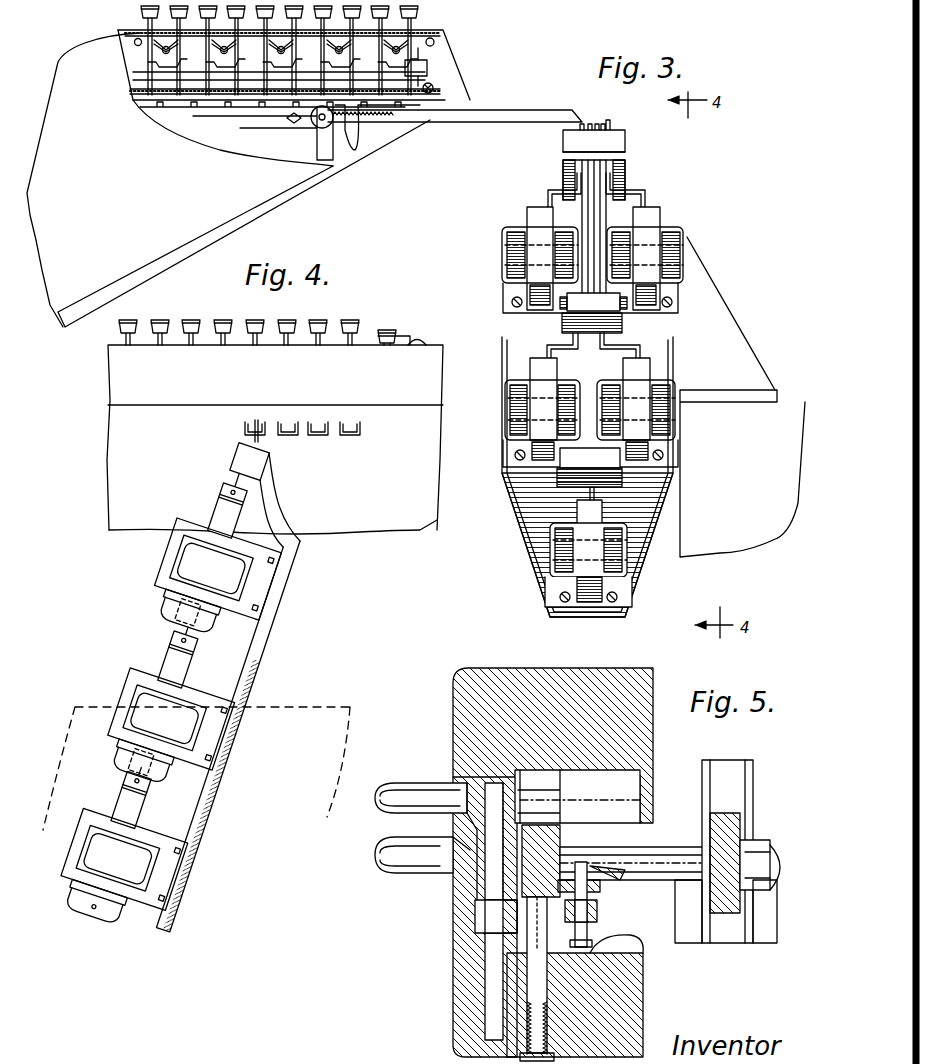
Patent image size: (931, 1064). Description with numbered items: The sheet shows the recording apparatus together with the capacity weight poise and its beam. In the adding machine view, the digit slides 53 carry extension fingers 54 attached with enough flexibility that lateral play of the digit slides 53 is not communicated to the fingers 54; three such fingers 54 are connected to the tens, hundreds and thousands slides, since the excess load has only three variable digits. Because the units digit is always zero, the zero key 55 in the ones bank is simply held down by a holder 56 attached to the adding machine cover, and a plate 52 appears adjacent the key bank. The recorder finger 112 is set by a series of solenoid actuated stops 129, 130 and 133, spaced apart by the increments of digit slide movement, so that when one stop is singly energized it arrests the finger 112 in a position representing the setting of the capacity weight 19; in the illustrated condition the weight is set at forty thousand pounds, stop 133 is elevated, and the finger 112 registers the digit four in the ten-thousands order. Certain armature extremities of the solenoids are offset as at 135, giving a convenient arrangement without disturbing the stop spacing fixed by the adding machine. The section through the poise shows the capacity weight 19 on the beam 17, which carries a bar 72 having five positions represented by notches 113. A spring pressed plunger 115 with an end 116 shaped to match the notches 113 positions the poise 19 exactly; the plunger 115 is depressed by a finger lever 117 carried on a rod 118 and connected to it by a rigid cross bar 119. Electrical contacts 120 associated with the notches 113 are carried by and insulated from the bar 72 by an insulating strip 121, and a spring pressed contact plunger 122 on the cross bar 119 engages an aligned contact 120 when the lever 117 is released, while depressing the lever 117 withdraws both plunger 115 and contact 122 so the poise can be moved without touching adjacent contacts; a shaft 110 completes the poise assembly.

In FIG. 3, the key plate 52 is at (170, 240).
In FIG. 4, the key plate 52 is at (145, 372).
In FIG. 3, the digit slides 53 is at (233, 113).
In FIG. 4, the extension fingers 54 is at (350, 430).
In FIG. 4, the "0" key 55 is at (374, 342).
In FIG. 4, the holder 56 is at (419, 343).
In FIG. 3, the finger 112 is at (504, 122).
In FIG. 4, the finger 112 is at (255, 430).
In FIG. 3, the solenoid actuated stop 129 is at (585, 127).
In FIG. 3, the solenoid actuated stop 133 is at (611, 120).
In FIG. 3, the offset armature extremity 135 is at (633, 190).
In FIG. 4, the offset armature extremity 135 is at (220, 517).
In FIG. 3, the solenoid actuated stop 130 is at (517, 252).
In FIG. 4, the solenoid actuated stop 130 is at (195, 558).
In FIG. 5, the capacity weight 19 is at (635, 675).
In FIG. 5, the finger lever 117 is at (402, 790).
In FIG. 5, the shaft 110 is at (545, 792).
In FIG. 5, the bar 72 is at (548, 845).
In FIG. 5, the insulating strip 121 is at (600, 862).
In FIG. 5, the beam 17 is at (738, 822).
In FIG. 5, the electrical contacts 120 is at (596, 893).
In FIG. 5, the spring pressed contact plunger 122 is at (598, 918).
In FIG. 5, the notches 113 is at (490, 910).
In FIG. 5, the cross bar 119 is at (480, 918).
In FIG. 5, the plunger end 116 is at (535, 918).
In FIG. 5, the rod 118 is at (494, 978).
In FIG. 5, the spring pressed plunger 115 is at (605, 975).